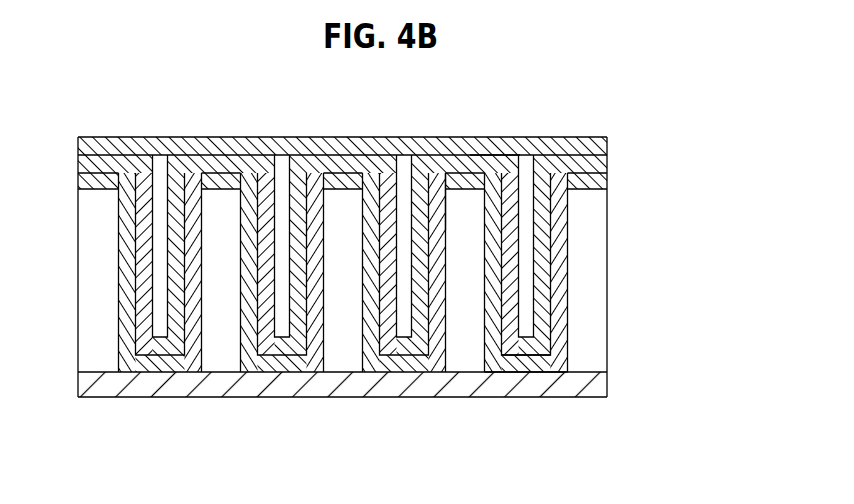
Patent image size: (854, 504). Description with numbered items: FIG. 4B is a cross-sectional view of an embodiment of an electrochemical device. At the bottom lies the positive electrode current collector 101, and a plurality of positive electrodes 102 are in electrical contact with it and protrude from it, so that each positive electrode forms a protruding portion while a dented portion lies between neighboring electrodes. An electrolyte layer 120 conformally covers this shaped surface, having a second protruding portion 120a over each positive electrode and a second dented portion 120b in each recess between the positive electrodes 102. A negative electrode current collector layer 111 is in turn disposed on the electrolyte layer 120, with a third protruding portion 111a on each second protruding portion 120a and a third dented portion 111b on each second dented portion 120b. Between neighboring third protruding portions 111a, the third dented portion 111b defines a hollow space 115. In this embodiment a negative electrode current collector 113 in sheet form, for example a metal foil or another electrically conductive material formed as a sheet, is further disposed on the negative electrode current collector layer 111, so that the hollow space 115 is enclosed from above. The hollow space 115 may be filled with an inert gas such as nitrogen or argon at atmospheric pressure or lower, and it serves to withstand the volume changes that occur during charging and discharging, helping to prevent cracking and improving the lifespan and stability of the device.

The positive electrode current collector 101 is at (607, 385).
The positive electrodes 102 is at (607, 278).
The negative electrode current collector layer 111 is at (607, 163).
The third protruding portion 111a is at (492, 161).
The third dented portion 111b is at (540, 352).
The negative electrode current collector 113 is at (607, 145).
The hollow space 115 is at (568, 238).
The electrolyte layer 120 is at (607, 185).
The second protruding portion 120a is at (456, 172).
The second dented portion 120b is at (525, 360).